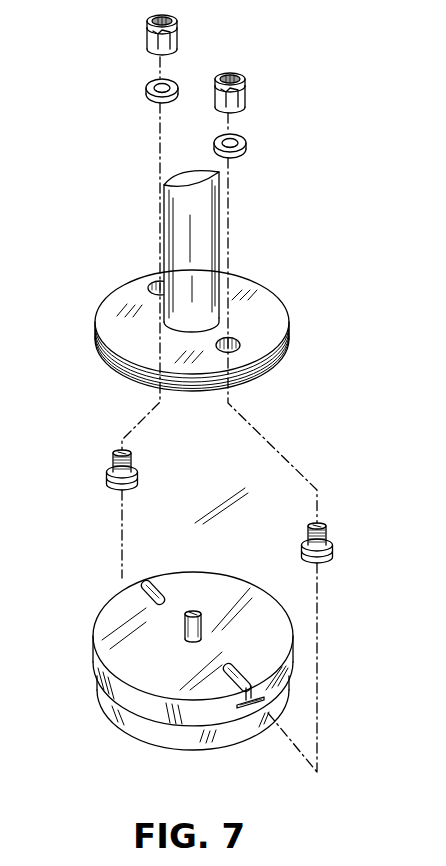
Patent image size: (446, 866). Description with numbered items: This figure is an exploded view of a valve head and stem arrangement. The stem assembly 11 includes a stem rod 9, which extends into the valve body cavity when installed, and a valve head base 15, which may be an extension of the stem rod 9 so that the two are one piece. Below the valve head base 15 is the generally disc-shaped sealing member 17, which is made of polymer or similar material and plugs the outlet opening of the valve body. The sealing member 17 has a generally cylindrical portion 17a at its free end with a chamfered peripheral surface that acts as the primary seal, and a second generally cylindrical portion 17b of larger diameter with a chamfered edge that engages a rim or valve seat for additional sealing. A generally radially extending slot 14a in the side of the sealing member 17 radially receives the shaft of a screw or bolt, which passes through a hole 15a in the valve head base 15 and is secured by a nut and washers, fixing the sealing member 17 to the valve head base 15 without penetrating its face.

The stem rod 9 is at (205, 197).
The stem assembly 11 is at (98, 178).
The radially extending slot 14a is at (140, 588).
The valve head base 15 is at (285, 345).
The hole 15a is at (242, 352).
The sealing member 17 is at (85, 600).
The generally cylindrical portion 17a is at (157, 737).
The second generally cylindrical portion 17b is at (118, 716).